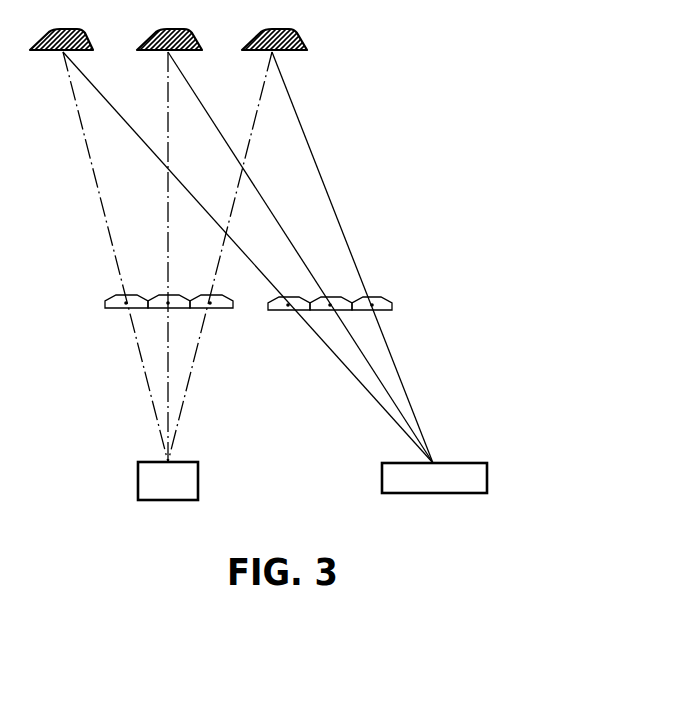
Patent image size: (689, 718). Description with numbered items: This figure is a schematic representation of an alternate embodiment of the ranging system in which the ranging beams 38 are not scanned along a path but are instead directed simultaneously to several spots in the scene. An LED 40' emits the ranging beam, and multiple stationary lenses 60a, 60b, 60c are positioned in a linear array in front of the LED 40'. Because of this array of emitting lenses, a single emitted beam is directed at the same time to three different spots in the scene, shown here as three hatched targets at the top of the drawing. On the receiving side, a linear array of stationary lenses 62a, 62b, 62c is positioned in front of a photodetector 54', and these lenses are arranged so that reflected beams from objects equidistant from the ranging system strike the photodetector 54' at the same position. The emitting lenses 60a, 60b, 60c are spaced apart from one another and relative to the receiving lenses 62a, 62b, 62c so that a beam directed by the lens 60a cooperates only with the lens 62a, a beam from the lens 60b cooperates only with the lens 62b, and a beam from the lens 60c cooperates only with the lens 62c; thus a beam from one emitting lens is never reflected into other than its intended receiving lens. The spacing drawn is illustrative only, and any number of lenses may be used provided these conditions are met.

The ranging beams 38 is at (220, 243).
The stationary lens 60a is at (118, 298).
The stationary lens 60b is at (157, 296).
The stationary lens 60c is at (205, 297).
The stationary lens 62a is at (292, 296).
The stationary lens 62b is at (341, 295).
The stationary lens 62c is at (378, 297).
The LED 40' is at (197, 481).
The photodetector 54' is at (507, 466).